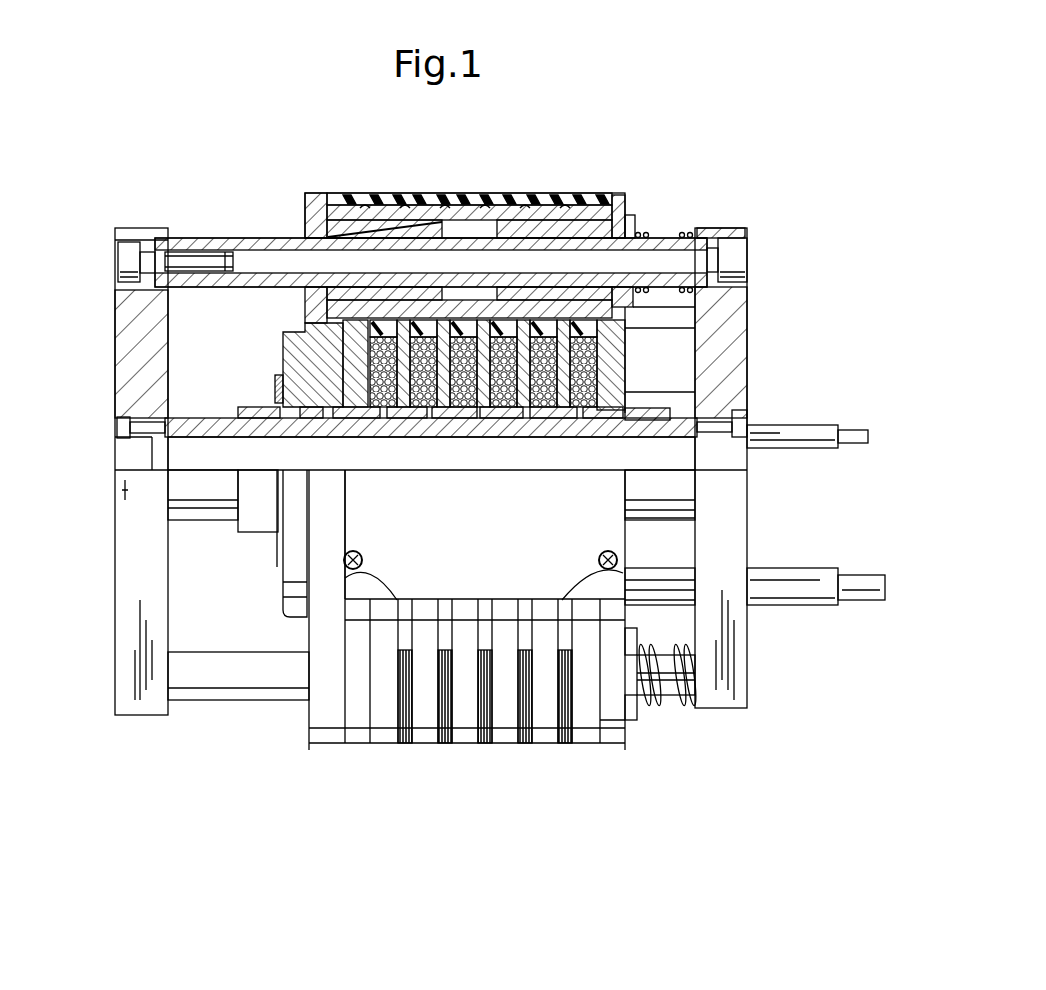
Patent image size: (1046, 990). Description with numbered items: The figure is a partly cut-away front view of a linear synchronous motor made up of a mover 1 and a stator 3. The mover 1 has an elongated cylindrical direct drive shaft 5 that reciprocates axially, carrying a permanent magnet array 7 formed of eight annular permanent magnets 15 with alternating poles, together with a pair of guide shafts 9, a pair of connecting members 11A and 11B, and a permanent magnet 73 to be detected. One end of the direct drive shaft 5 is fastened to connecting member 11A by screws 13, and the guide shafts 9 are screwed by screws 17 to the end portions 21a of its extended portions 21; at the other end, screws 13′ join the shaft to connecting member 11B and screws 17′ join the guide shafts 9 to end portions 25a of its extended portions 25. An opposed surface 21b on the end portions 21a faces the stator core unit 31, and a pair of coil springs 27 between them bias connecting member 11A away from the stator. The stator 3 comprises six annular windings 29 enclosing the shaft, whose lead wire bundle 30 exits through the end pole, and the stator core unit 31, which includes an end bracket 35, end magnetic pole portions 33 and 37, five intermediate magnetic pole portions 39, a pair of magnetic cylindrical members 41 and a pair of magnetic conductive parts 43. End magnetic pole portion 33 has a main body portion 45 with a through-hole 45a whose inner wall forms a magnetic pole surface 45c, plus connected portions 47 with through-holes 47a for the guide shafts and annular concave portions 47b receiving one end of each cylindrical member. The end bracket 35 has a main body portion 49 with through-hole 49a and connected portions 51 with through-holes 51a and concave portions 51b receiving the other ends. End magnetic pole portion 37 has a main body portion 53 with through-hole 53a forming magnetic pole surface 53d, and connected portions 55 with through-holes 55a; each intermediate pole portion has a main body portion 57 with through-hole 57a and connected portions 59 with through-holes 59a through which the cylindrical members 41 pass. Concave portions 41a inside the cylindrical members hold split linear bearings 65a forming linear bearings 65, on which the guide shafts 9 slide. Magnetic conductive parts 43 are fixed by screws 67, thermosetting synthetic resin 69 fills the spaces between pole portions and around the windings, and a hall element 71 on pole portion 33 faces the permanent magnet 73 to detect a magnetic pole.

The mover 1 is at (98, 298).
The stator 3 is at (299, 200).
The direct drive shaft 5 is at (300, 438).
The permanent magnet array 7 is at (236, 396).
The guide shafts 9 is at (180, 240).
The connecting member 11A is at (745, 373).
The connecting member 11B is at (130, 393).
The screws 13 is at (750, 430).
The screws 13′ is at (115, 428).
The permanent magnets 15 is at (130, 490).
The screws 17 is at (748, 262).
The screws 17′ is at (117, 255).
The extended portions 21 is at (735, 345).
The end portions 21a is at (740, 235).
The opposed surface 21b is at (700, 228).
The extended portions 25 is at (140, 360).
The end portions 25a is at (140, 232).
The coil springs 27 is at (700, 292).
The annular windings 29 is at (400, 420).
The lead wire bundle 30 is at (848, 568).
The stator core unit 31 is at (635, 188).
The end magnetic pole portion 33 is at (633, 756).
The end bracket 35 is at (304, 762).
The end magnetic pole portion 37 is at (383, 760).
The intermediate magnetic pole portions 39 is at (410, 758).
The magnetic cylindrical members 41 is at (340, 195).
The concave portions 41a is at (395, 195).
The magnetic conductive parts 43 is at (290, 520).
The main body portion 45 is at (583, 420).
The through-hole 45a is at (660, 440).
The magnetic pole surface 45c is at (640, 440).
The first pair of connected portions 47 is at (610, 722).
The through-hole 47a is at (655, 233).
The annular concave portion 47b is at (640, 228).
The main body portion 49 is at (300, 600).
The through-hole 49a is at (300, 395).
The first pair of connected portions 51 is at (320, 745).
The through-hole 51a is at (320, 240).
The annular concave portion 51b is at (312, 215).
The main body portion 53 is at (365, 410).
The through-hole 53a is at (290, 480).
The magnetic pole surface 53d is at (290, 470).
The first pair of connected portions 55 is at (355, 707).
The through-hole 55a is at (362, 200).
The main body portion 57 is at (420, 420).
The through-hole 57a is at (410, 420).
The first pair of connected portions 59 is at (555, 650).
The through-hole 59a is at (414, 200).
The linear bearing 65 is at (336, 310).
The split linear bearings 65a is at (330, 295).
The screws 67 is at (190, 690).
The thermosetting synthetic resin 69 is at (330, 310).
The hall element 71 is at (660, 415).
The permanent magnet to be detected 73 is at (700, 405).